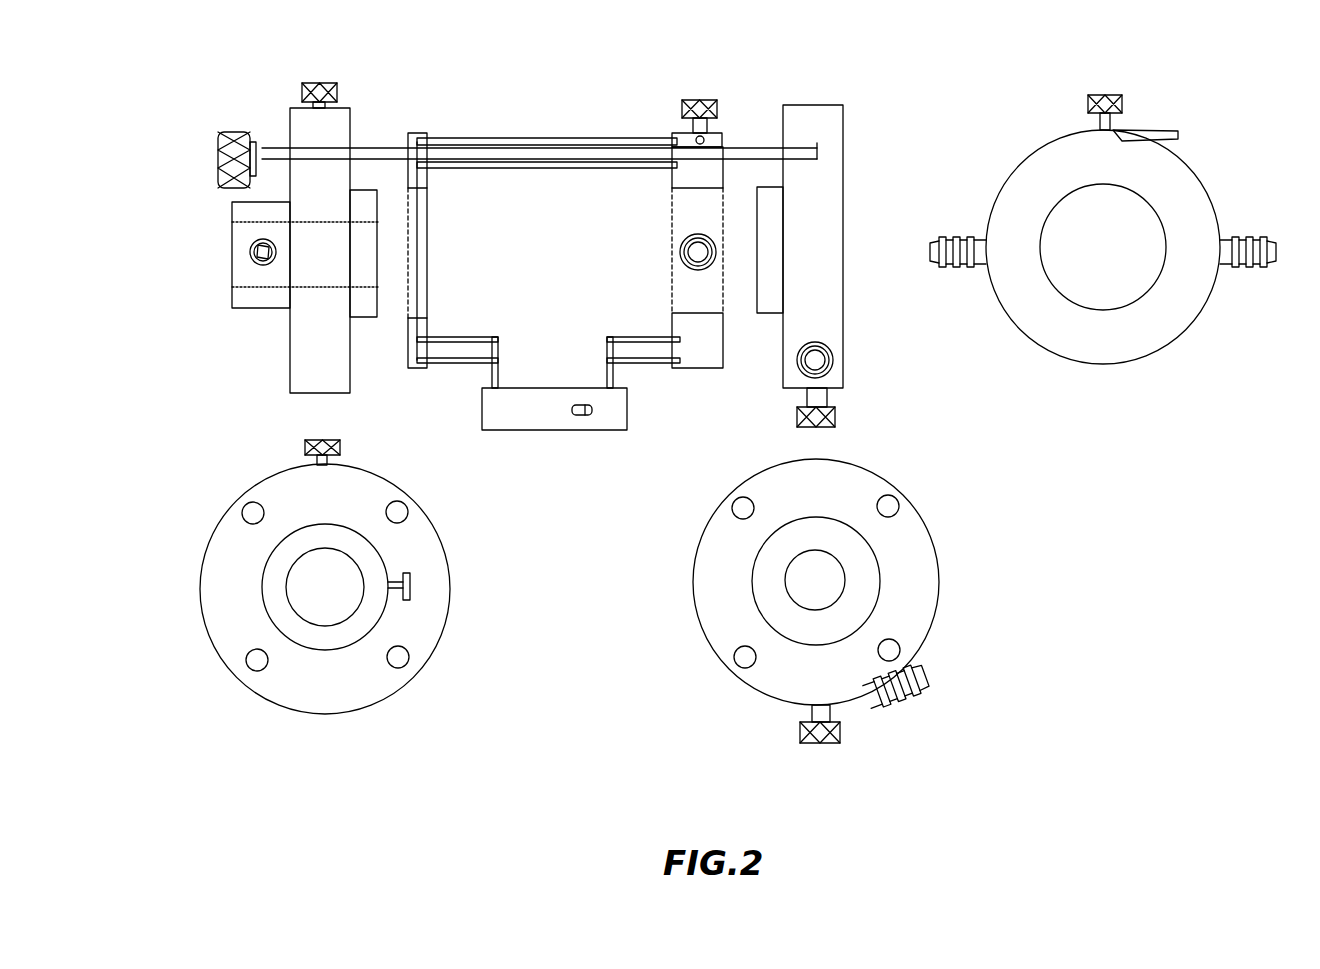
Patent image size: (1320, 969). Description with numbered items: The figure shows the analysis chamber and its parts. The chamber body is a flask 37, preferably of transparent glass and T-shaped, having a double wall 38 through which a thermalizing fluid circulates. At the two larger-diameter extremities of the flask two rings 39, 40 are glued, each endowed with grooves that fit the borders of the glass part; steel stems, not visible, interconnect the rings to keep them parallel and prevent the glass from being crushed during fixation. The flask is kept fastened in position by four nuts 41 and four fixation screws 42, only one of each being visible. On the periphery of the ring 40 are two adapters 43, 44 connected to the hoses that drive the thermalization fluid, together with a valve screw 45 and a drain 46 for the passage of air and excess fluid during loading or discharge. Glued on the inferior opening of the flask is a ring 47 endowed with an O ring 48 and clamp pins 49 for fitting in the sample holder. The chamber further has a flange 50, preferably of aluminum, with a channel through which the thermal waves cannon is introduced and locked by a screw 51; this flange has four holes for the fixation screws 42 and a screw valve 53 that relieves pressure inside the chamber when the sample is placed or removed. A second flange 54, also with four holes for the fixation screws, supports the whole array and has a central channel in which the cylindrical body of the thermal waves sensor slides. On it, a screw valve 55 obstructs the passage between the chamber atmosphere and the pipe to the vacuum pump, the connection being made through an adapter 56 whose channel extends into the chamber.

The flask 37 is at (836, 263).
The double wall 38 is at (462, 152).
The ring 39 is at (401, 354).
The ring 40 is at (738, 341).
The nut 41 is at (212, 124).
The fixation screw 42 is at (379, 138).
The adapter 43 is at (671, 245).
The adapter 44 is at (919, 238).
The valve screw 45 is at (708, 95).
The drain 46 is at (712, 134).
The ring 47 is at (470, 411).
The O ring 48 is at (604, 433).
The clamp pin 49 is at (568, 408).
The flange 50 is at (268, 351).
The screw 51 is at (250, 258).
The screw valve 53 is at (300, 74).
The second flange 54 is at (897, 478).
The screw valve 55 is at (793, 426).
The adapter 56 is at (840, 353).